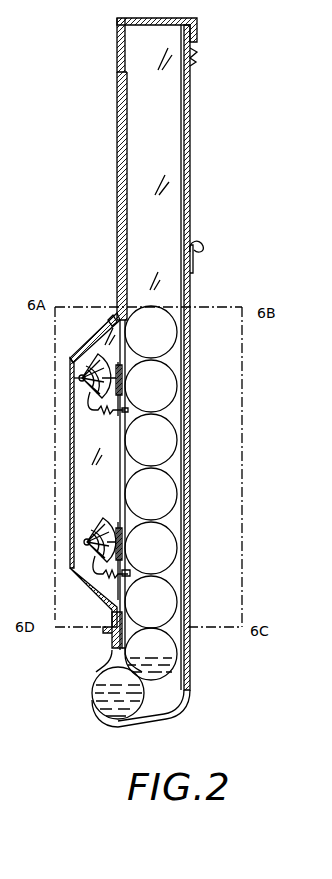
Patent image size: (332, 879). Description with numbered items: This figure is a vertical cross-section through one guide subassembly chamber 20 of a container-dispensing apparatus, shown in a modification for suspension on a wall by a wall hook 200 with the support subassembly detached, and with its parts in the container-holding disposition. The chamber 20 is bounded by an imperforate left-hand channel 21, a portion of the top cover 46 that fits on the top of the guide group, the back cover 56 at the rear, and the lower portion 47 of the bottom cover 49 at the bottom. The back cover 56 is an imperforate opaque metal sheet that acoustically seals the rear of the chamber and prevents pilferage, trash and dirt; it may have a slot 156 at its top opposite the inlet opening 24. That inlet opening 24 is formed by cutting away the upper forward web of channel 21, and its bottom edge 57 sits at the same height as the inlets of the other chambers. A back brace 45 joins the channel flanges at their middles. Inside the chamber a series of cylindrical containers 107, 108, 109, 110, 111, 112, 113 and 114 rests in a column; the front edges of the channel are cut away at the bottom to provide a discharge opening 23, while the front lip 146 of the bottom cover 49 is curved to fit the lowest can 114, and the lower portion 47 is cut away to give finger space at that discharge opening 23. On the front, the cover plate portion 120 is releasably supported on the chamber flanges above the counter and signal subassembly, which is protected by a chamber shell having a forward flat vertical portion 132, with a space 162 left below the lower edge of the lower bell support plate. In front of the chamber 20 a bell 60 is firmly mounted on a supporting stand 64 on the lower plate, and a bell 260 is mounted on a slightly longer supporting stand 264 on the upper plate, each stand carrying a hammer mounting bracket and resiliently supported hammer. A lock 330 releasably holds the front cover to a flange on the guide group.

The guide subassembly chamber 20 is at (140, 143).
The imperforate left-hand channel 21 is at (160, 110).
The inlet opening 24 is at (117, 62).
The bottom edge of inlet opening 57 is at (118, 72).
The cover plate portion 120 is at (117, 222).
The top cover 46 is at (197, 25).
The slot 156 is at (197, 60).
The back cover 56 is at (190, 148).
The bottom cover 49 is at (185, 544).
The wall hook 200 is at (201, 249).
The back brace 45 is at (193, 272).
The lock 330 is at (100, 322).
The forward flat vertical portion 132 is at (70, 519).
The space 162 is at (120, 598).
The bell 260 is at (80, 379).
The supporting stand 264 is at (118, 398).
The bell 60 is at (85, 545).
The supporting stand 64 is at (110, 536).
The cylindrical container 107 is at (139, 340).
The cylindrical container 108 is at (139, 394).
The cylindrical container 109 is at (139, 448).
The cylindrical container 110 is at (139, 502).
The cylindrical container 111 is at (139, 556).
The cylindrical container 112 is at (139, 610).
The cylindrical container 113 is at (165, 662).
The cylindrical container 114 is at (104, 687).
The discharge opening 23 is at (106, 656).
The front lip 146 is at (100, 706).
The lower portion of bottom cover 47 is at (106, 724).